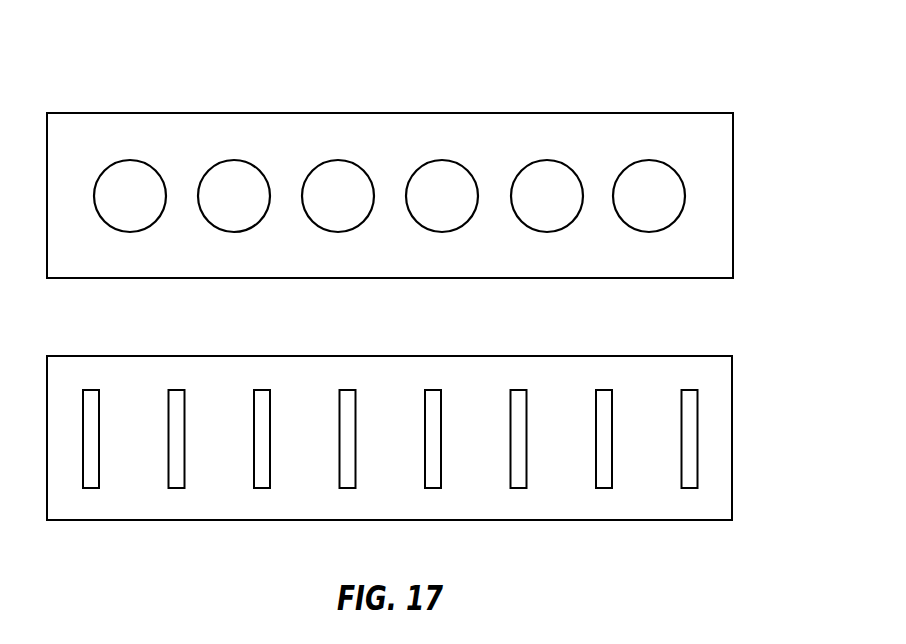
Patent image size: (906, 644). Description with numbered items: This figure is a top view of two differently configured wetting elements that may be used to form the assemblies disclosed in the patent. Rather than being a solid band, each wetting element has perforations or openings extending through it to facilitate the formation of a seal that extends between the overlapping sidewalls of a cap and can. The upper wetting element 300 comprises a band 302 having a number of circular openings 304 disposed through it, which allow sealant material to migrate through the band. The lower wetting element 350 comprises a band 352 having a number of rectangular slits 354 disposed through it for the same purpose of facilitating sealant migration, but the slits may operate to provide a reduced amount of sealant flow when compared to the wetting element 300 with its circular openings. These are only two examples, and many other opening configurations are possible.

The wetting element 300 is at (705, 73).
The band 302 is at (635, 135).
The circular openings 304 is at (548, 185).
The wetting element 350 is at (706, 349).
The band 352 is at (298, 504).
The rectangular slits 354 is at (520, 470).